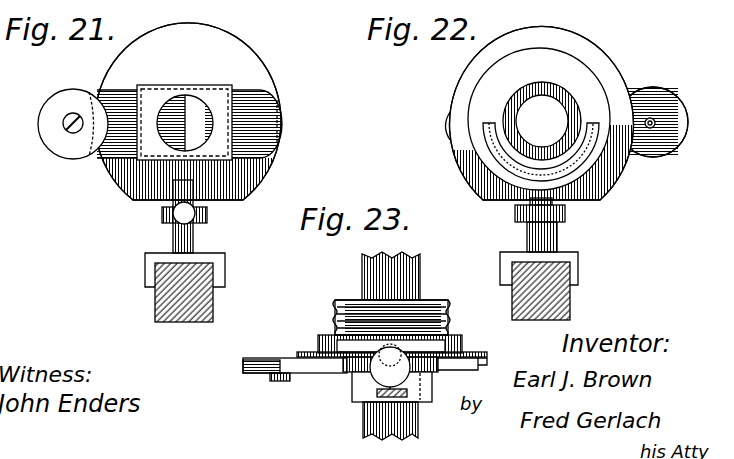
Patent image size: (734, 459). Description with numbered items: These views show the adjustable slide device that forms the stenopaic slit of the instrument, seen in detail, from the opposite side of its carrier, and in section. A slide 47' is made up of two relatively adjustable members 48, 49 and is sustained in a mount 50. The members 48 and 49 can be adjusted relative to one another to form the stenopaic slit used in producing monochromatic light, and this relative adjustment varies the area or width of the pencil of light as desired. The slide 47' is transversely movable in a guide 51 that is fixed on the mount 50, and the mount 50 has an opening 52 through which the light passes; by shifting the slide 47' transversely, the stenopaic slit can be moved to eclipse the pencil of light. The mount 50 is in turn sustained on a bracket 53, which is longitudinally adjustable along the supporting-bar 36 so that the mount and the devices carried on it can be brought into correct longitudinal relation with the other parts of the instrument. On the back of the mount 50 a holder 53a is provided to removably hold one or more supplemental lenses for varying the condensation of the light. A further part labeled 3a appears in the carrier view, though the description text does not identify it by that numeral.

In FIG. 21, the mount 50 is at (245, 67).
In FIG. 22, the mount 50 is at (598, 55).
In FIG. 23, the mount 50 is at (300, 353).
In FIG. 21, the slide 47' is at (204, 124).
In FIG. 22, the slide 47' is at (653, 107).
In FIG. 23, the slide 47' is at (365, 384).
In FIG. 21, the adjustable member 48 is at (117, 158).
In FIG. 21, the adjustable member 49 is at (98, 118).
In FIG. 21, the guide 51 is at (205, 93).
In FIG. 23, the guide 51 is at (436, 370).
In FIG. 21, the opening 52 is at (167, 103).
In FIG. 21, the bracket 53 is at (203, 243).
In FIG. 22, the bracket 53 is at (556, 244).
In FIG. 23, the holder 53a is at (447, 312).
In FIG. 21, the supporting-bar 36 is at (158, 310).
In FIG. 22, the supporting-bar 36 is at (573, 308).
In FIG. 23, the supporting-bar 36 is at (363, 422).
In FIG. 22, the spring 3a is at (502, 162).